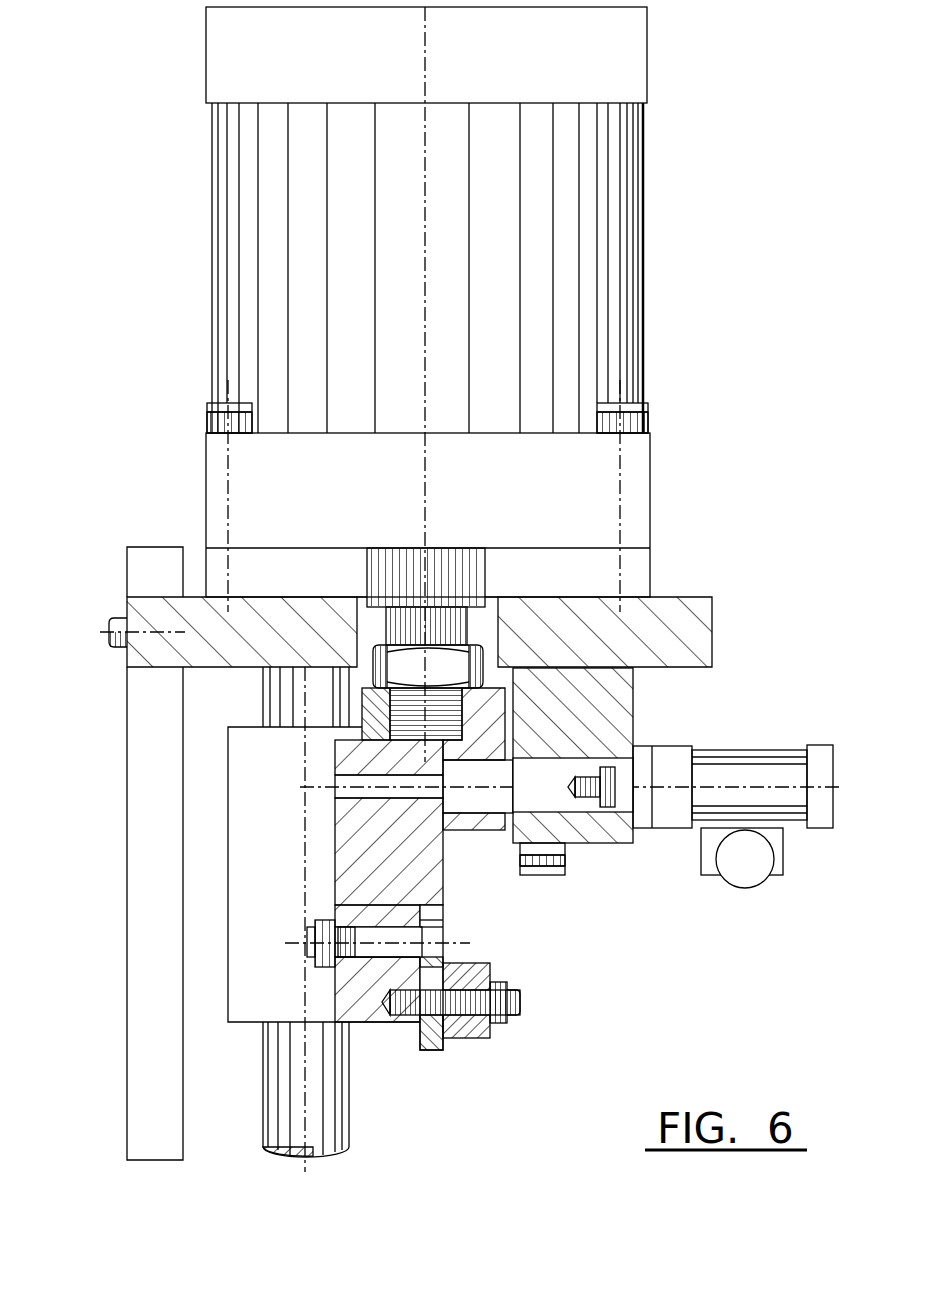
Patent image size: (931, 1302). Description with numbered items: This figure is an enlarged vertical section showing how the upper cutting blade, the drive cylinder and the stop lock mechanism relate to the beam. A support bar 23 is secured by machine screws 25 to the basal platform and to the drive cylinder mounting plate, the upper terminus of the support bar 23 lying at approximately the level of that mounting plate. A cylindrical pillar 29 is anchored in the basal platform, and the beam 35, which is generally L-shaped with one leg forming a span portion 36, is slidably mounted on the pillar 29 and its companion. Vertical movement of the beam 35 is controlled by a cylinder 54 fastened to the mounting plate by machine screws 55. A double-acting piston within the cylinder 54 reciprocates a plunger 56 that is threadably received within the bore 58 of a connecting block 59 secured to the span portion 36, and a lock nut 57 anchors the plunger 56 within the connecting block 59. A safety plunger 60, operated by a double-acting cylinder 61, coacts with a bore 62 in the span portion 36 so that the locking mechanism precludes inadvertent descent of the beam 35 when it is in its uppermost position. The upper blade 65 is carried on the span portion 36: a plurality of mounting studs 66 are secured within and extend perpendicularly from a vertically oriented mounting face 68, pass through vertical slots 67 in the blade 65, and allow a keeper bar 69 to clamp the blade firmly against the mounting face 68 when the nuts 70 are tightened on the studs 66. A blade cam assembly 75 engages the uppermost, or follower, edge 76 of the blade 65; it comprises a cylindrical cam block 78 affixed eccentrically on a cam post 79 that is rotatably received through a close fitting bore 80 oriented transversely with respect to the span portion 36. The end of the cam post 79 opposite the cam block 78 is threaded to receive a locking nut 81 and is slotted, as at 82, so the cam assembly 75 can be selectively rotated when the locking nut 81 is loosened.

The support bar 23 is at (158, 1097).
The machine screw 25 is at (118, 625).
The pillar 29 is at (330, 1115).
The beam 35 is at (462, 862).
The span portion 36 is at (352, 858).
The cylinder 54 is at (617, 273).
The machine screw 55 is at (213, 411).
The plunger 56 is at (455, 626).
The lock nut 57 is at (445, 662).
The bore 58 is at (452, 705).
The connecting block 59 is at (483, 742).
The safety plunger 60 is at (586, 800).
The double-acting cylinder 61 is at (752, 770).
The bore 62 is at (363, 776).
The upper blade 65 is at (430, 1050).
The mounting stud 66 is at (520, 1010).
The vertical slot 67 is at (470, 980).
The mounting face 68 is at (422, 1032).
The keeper bar 69 is at (488, 1035).
The nut 70 is at (507, 987).
The blade cam assembly 75 is at (458, 914).
The follower edge 76 is at (430, 957).
The cam block 78 is at (427, 927).
The cam post 79 is at (375, 958).
The bore 80 is at (390, 933).
The locking nut 81 is at (325, 948).
The slot 82 is at (307, 940).